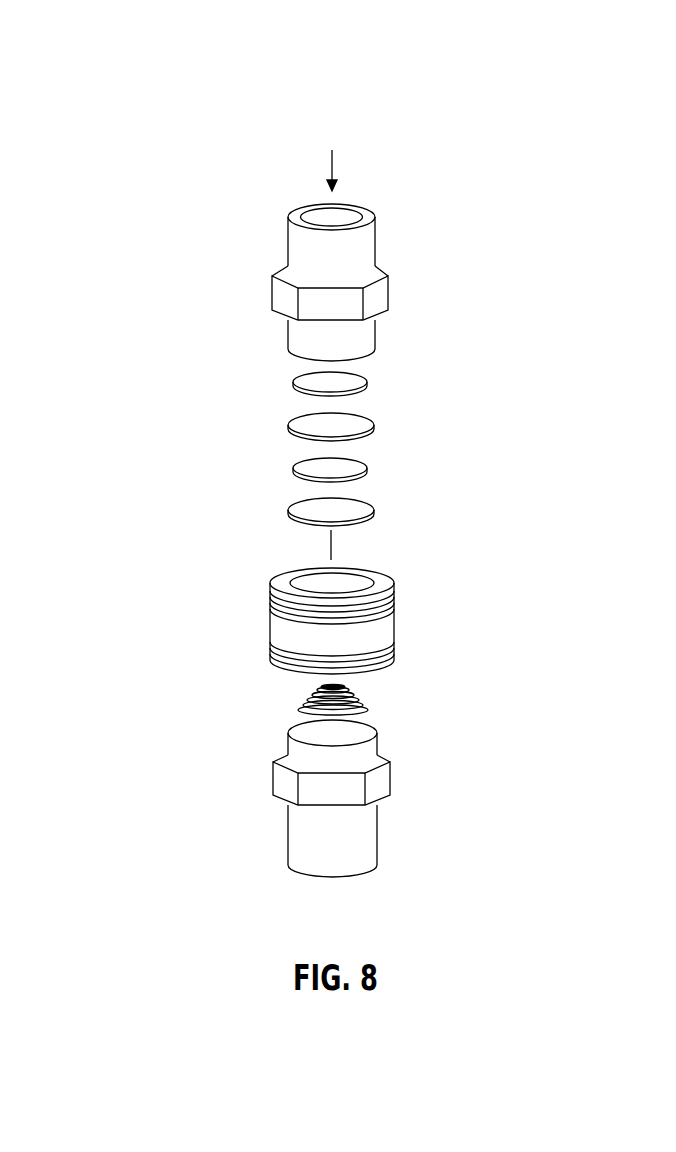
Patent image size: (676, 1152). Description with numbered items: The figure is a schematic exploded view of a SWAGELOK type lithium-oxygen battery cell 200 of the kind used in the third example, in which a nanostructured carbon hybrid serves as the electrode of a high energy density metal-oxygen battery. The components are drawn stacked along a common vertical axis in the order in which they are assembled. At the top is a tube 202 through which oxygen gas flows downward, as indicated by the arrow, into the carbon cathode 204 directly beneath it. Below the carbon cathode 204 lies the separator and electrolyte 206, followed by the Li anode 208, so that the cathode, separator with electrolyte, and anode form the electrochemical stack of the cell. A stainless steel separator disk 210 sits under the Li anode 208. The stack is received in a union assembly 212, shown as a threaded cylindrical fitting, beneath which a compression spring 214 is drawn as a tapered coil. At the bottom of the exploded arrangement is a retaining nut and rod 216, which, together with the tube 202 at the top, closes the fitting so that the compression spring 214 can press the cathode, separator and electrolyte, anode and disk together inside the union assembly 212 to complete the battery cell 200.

The battery cell 200 is at (347, 30).
The tube 202 is at (377, 247).
The carbon cathode 204 is at (367, 384).
The separator and electrolyte 206 is at (374, 427).
The Li anode 208 is at (368, 469).
The stainless steel separator disk 210 is at (375, 513).
The union assembly 212 is at (396, 621).
The compression spring 214 is at (368, 709).
The retaining nut and rod 216 is at (390, 779).